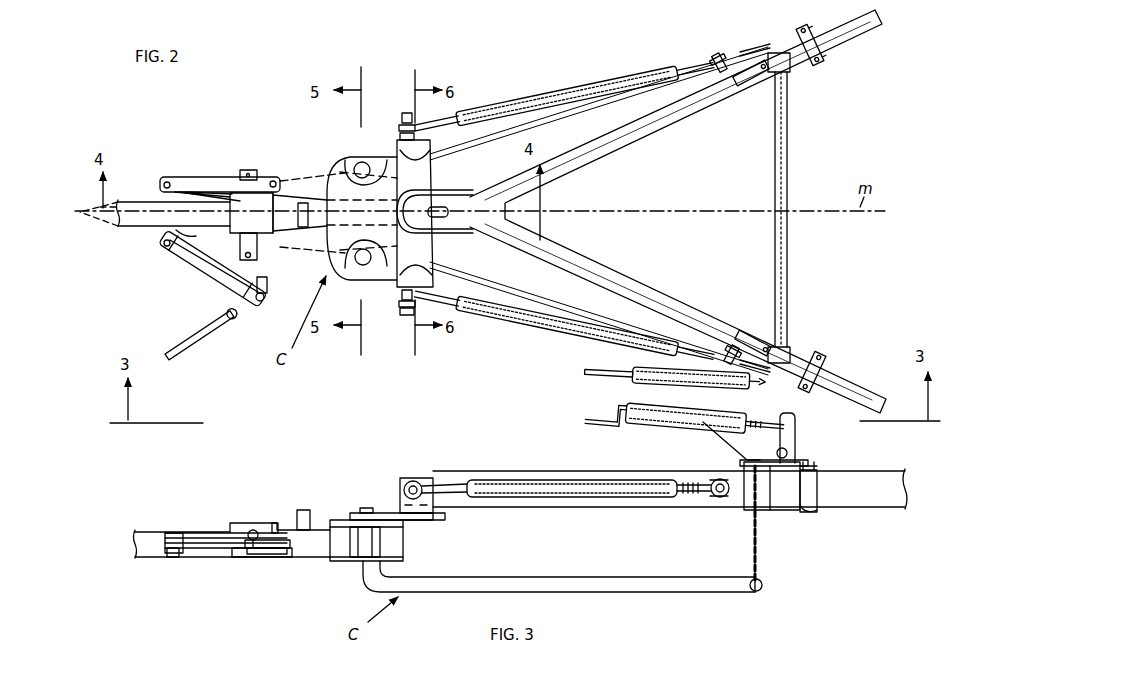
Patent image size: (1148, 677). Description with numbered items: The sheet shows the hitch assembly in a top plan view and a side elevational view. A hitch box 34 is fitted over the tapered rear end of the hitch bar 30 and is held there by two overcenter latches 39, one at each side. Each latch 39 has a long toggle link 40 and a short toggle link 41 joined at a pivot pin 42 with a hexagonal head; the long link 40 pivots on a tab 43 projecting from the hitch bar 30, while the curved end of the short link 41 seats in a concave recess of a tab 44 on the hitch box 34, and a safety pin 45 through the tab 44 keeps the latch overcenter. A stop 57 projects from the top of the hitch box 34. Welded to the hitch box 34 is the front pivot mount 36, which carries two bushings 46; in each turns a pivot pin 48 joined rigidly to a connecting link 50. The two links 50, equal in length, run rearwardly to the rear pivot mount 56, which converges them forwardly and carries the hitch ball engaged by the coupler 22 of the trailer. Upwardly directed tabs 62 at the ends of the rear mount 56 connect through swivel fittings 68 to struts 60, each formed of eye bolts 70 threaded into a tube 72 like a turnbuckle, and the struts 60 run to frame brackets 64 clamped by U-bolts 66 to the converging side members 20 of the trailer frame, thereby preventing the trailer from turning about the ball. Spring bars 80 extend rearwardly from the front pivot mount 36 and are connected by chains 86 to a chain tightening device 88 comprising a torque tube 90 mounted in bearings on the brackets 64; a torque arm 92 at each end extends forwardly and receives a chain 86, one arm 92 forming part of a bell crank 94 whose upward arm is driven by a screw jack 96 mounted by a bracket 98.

In FIG. 2, the side members 20 is at (638, 135).
In FIG. 3, the side members 20 is at (656, 508).
In FIG. 2, the coupler 22 is at (440, 232).
In FIG. 2, the hitch bar 30 is at (137, 200).
In FIG. 3, the hitch bar 30 is at (147, 558).
In FIG. 2, the hitch box 34 is at (287, 193).
In FIG. 3, the hitch box 34 is at (302, 545).
In FIG. 2, the pivot mount 36 is at (340, 160).
In FIG. 3, the pivot mount 36 is at (343, 561).
In FIG. 2, the overcenter latches 39 is at (204, 170).
In FIG. 3, the overcenter latches 39 is at (187, 530).
In FIG. 2, the long toggle link 40 is at (183, 178).
In FIG. 3, the long toggle link 40 is at (208, 532).
In FIG. 2, the short toggle link 41 is at (260, 177).
In FIG. 3, the short toggle link 41 is at (266, 558).
In FIG. 2, the pivot pin 42 is at (258, 301).
In FIG. 3, the pivot pin 42 is at (275, 522).
In FIG. 2, the tab 43 is at (178, 250).
In FIG. 3, the tab 43 is at (173, 558).
In FIG. 2, the tab 44 is at (240, 250).
In FIG. 3, the tab 44 is at (246, 552).
In FIG. 3, the safety pin 45 is at (253, 529).
In FIG. 3, the bushings 46 is at (382, 543).
In FIG. 2, the pivot pin 48 is at (361, 162).
In FIG. 2, the connecting links 50 is at (398, 150).
In FIG. 3, the connecting links 50 is at (385, 513).
In FIG. 2, the rear pivot mount 56 is at (440, 180).
In FIG. 3, the rear pivot mount 56 is at (440, 518).
In FIG. 2, the stop 57 is at (303, 229).
In FIG. 3, the stop 57 is at (312, 510).
In FIG. 2, the struts 60 is at (545, 100).
In FIG. 3, the struts 60 is at (547, 476).
In FIG. 3, the tabs 62 is at (403, 482).
In FIG. 2, the frame brackets 64 is at (757, 95).
In FIG. 3, the frame brackets 64 is at (806, 512).
In FIG. 3, the U-bolts 66 is at (817, 508).
In FIG. 2, the swivel fittings 68 is at (407, 112).
In FIG. 3, the swivel fittings 68 is at (413, 480).
In FIG. 3, the eye bolts 70 is at (445, 482).
In FIG. 3, the tube 72 is at (596, 498).
In FIG. 3, the spring bars 80 is at (661, 593).
In FIG. 3, the chains 86 is at (762, 565).
In FIG. 2, the chain tightening device 88 is at (770, 228).
In FIG. 2, the torque tube 90 is at (790, 162).
In FIG. 3, the torque tube 90 is at (795, 451).
In FIG. 2, the torque arm 92 is at (762, 47).
In FIG. 3, the torque arm 92 is at (772, 510).
In FIG. 3, the bell crank 94 is at (797, 436).
In FIG. 2, the screw jack 96 is at (640, 373).
In FIG. 3, the screw jack 96 is at (665, 412).
In FIG. 3, the bracket 98 is at (720, 435).